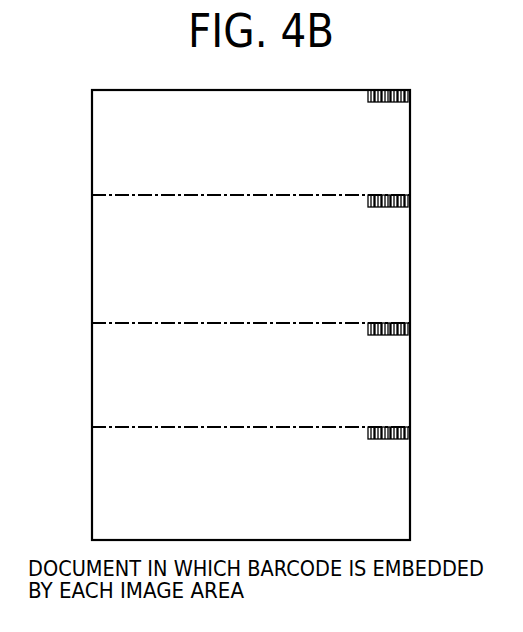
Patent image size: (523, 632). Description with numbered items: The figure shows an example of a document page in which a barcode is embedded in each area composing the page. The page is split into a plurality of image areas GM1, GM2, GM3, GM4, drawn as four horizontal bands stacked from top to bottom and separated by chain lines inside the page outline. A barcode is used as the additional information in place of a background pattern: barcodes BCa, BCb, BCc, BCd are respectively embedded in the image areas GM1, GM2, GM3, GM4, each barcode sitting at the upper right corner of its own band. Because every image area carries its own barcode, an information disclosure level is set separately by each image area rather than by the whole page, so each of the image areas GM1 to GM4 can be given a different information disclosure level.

The barcode BCa is at (406, 96).
The barcode BCb is at (408, 203).
The barcode BCc is at (408, 331).
The barcode BCd is at (408, 435).
The image area GM1 is at (426, 92).
The image area GM2 is at (426, 202).
The image area GM3 is at (426, 424).
The image area GM4 is at (426, 440).